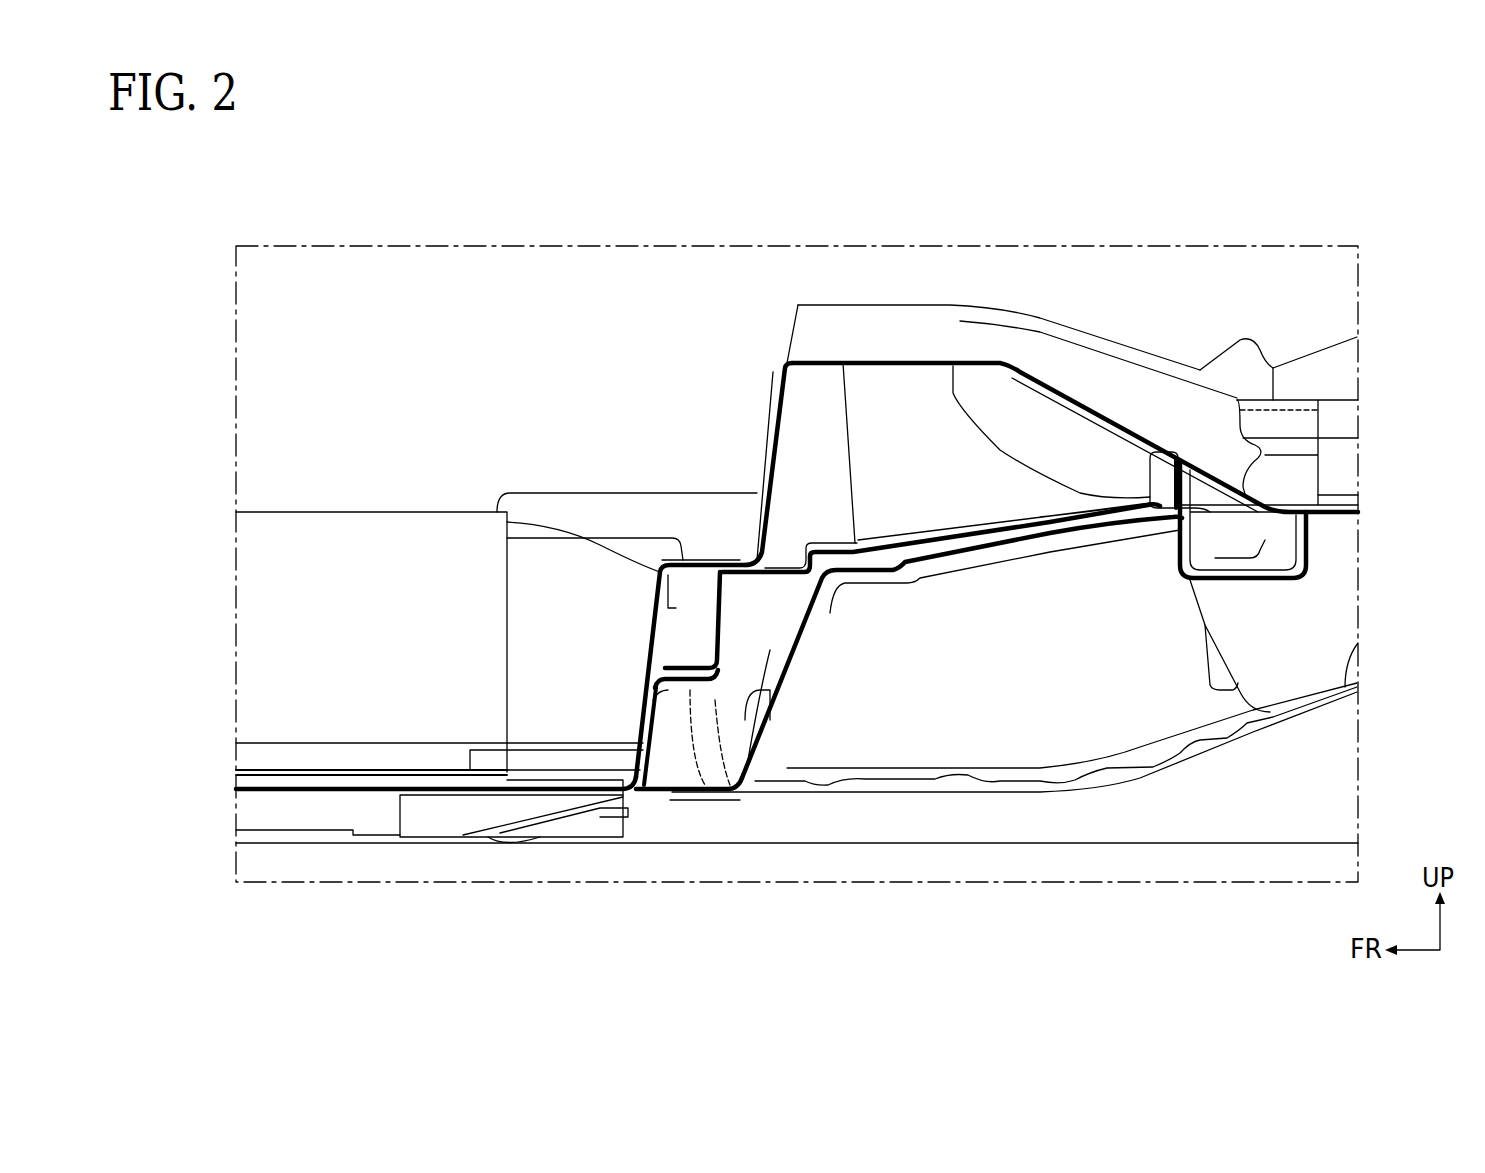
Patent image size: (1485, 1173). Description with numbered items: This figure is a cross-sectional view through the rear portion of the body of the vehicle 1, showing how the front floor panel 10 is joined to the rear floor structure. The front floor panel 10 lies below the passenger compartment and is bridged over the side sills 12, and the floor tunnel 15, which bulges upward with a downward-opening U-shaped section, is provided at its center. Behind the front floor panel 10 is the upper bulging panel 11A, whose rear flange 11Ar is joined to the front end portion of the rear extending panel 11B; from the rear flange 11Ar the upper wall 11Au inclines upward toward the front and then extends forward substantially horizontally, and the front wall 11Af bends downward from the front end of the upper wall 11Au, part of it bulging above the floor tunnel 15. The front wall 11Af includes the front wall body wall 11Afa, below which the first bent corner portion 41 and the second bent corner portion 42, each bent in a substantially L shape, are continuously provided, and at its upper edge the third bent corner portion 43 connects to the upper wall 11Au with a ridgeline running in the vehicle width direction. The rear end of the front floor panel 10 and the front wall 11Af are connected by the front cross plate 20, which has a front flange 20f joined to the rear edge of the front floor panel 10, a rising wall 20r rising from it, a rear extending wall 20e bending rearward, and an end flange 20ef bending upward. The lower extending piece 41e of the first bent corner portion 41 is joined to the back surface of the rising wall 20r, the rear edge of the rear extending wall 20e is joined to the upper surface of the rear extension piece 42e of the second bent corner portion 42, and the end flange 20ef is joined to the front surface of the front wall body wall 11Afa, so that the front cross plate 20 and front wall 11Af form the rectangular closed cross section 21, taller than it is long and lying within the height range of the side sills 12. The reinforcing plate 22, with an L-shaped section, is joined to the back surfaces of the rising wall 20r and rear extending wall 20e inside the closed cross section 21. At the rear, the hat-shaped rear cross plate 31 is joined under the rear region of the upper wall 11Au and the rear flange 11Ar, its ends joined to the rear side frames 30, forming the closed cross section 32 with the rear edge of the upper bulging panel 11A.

The vehicle 1 is at (1070, 266).
The front floor panel 10 is at (348, 800).
The upper bulging panel 11A is at (811, 296).
The front wall 11Af is at (770, 472).
The front wall body wall 11Afa is at (775, 425).
The upper wall 11Au is at (927, 362).
The rear flange 11Ar is at (1283, 497).
The rear extending panel 11B is at (1350, 388).
The side sill 12 is at (557, 488).
The floor tunnel 15 is at (346, 505).
The front cross plate 20 is at (645, 628).
The rear extending wall 20e is at (700, 660).
The end flange 20ef is at (678, 553).
The rising wall 20r is at (628, 710).
The front flange 20f is at (512, 840).
The closed cross section 21 is at (712, 675).
The reinforcing plate 22 is at (767, 590).
The rear side frame 30 is at (968, 792).
The rear cross plate 31 is at (1303, 567).
The closed cross section 32 is at (1268, 592).
The first bent corner portion 41 is at (688, 720).
The lower extending piece 41e is at (663, 685).
The second bent corner portion 42 is at (778, 585).
The rear extension piece 42e is at (727, 573).
The third bent corner portion 43 is at (787, 363).